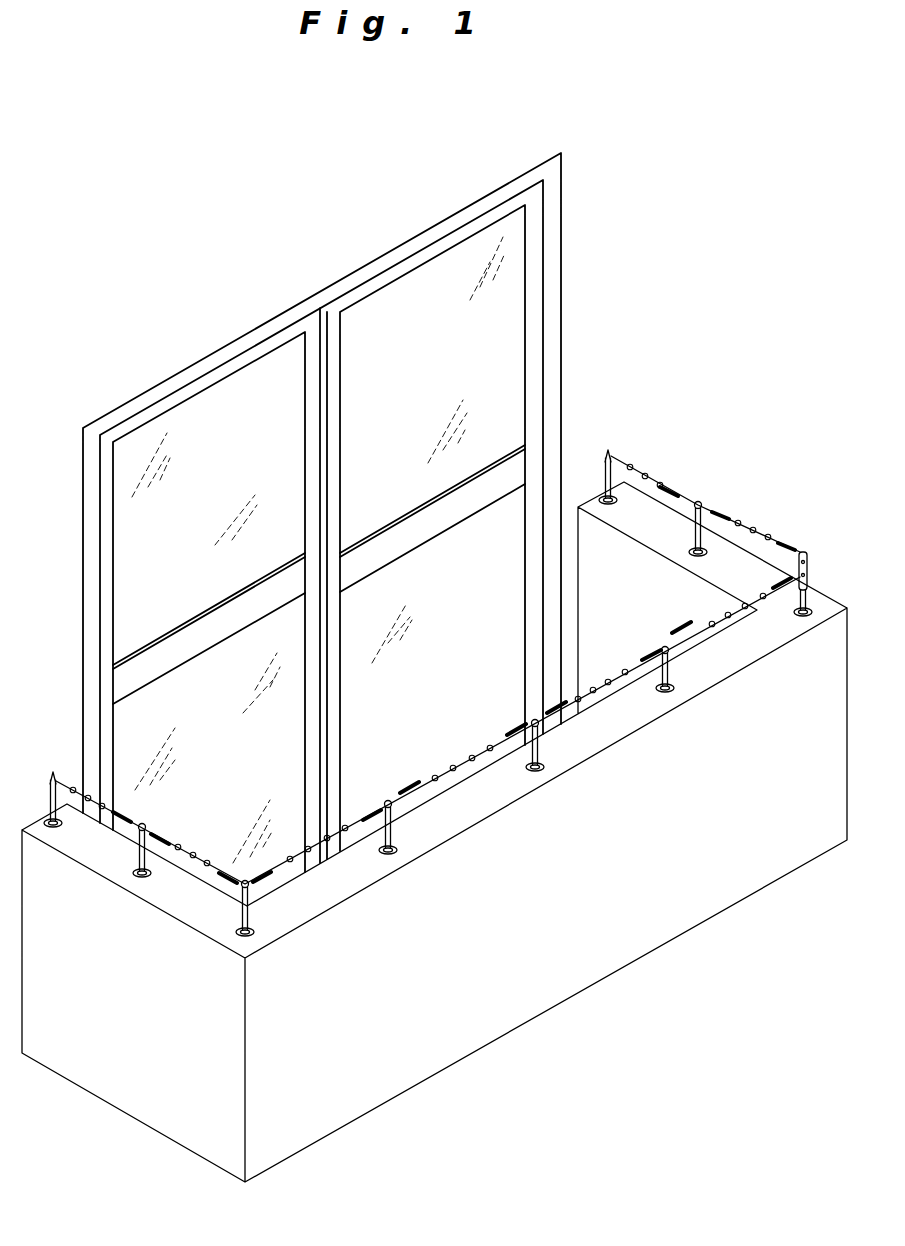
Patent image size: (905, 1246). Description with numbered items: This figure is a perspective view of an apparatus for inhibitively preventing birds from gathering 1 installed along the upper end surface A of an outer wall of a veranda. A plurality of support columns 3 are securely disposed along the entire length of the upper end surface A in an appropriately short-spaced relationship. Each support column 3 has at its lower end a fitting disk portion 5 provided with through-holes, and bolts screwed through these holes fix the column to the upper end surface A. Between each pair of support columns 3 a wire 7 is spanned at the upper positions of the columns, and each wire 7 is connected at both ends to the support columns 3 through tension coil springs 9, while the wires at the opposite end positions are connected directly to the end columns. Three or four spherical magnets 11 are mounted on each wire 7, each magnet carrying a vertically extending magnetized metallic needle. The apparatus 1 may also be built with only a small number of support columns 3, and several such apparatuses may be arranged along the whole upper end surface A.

The apparatus for inhibitively preventing birds from gathering 1 is at (840, 464).
The support column 3 is at (607, 448).
The fitting disk portion 5 is at (614, 504).
The wire 7 is at (673, 490).
The tension coil spring 9 is at (734, 522).
The spherical magnet 11 is at (652, 482).
The upper end surface of an outer wall of a veranda A is at (612, 722).